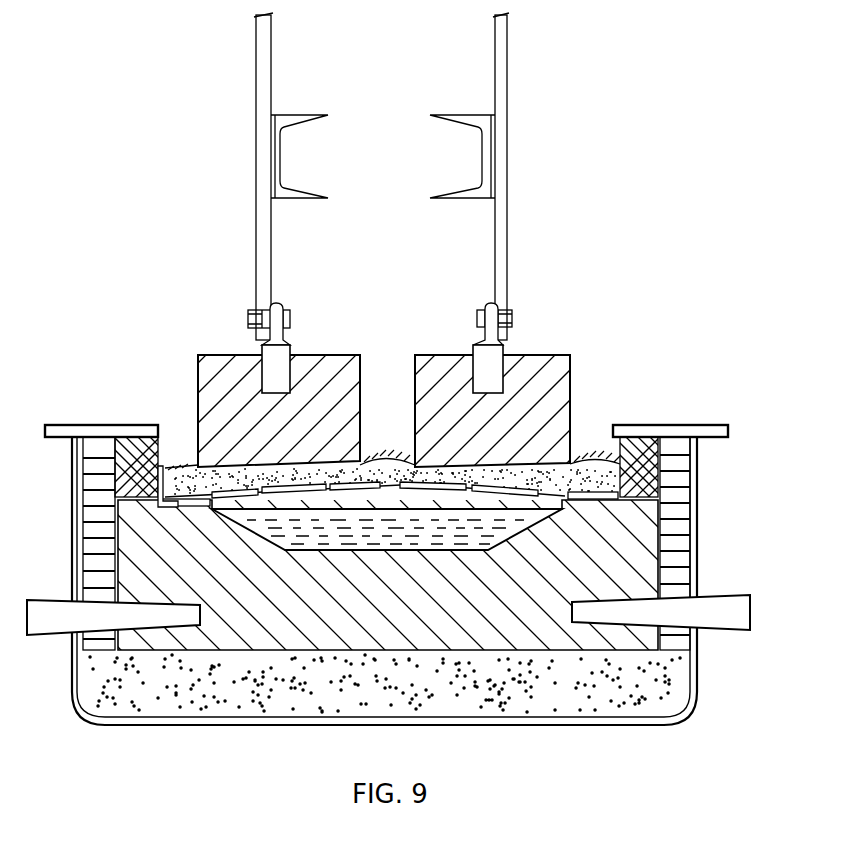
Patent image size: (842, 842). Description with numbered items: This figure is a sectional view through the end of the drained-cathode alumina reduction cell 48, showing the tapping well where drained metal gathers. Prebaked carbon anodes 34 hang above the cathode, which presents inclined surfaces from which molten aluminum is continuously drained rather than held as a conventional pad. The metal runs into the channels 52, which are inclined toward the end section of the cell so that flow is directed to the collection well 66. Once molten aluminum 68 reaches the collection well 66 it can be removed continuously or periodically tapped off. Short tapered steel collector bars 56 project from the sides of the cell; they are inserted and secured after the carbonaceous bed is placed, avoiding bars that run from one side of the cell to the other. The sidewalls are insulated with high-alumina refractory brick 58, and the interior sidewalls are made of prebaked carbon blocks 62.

The prebaked carbon anodes 34 is at (348, 355).
The cell 48 is at (606, 386).
The channels 52 is at (165, 468).
The tapered steel collector bars 56 is at (705, 618).
The high Al2O3 refractory brick 58 is at (680, 464).
The prebaked carbon blocks 62 is at (620, 447).
The collection well 66 is at (340, 552).
The molten aluminum 68 is at (432, 543).